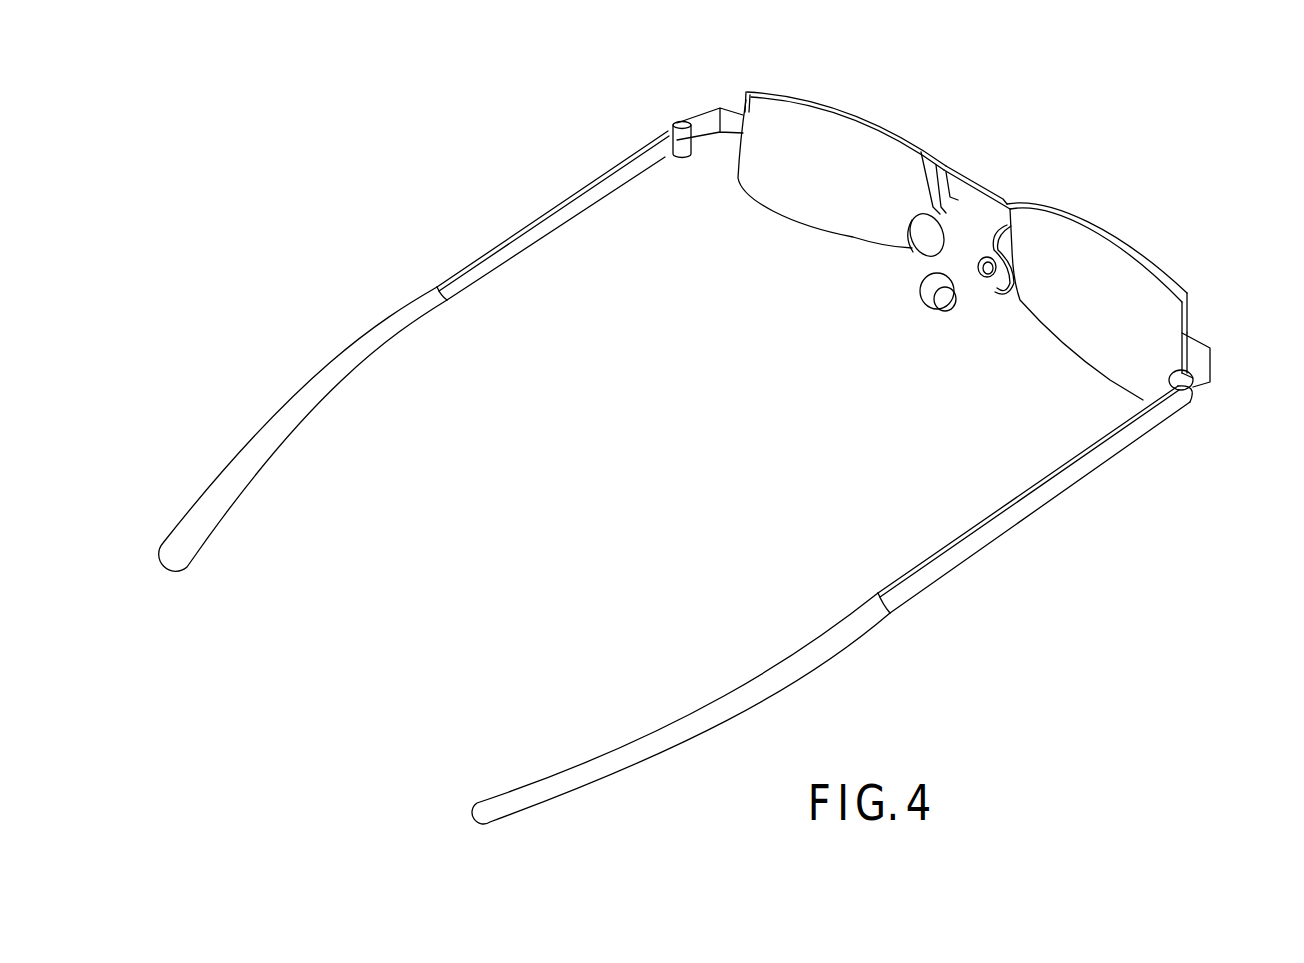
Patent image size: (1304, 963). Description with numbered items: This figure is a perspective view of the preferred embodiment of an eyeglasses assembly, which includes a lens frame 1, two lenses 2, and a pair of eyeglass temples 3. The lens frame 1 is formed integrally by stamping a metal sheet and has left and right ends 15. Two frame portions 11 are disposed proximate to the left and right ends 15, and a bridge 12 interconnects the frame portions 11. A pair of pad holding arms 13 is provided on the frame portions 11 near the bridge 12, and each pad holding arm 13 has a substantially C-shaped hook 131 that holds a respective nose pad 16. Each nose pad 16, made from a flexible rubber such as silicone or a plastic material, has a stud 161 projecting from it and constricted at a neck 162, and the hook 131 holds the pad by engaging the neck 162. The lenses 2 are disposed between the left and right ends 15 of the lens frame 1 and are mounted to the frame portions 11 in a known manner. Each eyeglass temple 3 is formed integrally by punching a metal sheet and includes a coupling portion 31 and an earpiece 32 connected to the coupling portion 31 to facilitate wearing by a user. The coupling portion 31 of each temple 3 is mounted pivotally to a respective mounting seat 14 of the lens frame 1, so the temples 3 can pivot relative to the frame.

The lens frame 1 is at (985, 172).
The frame portions 11 is at (843, 112).
The bridge 12 is at (1005, 196).
The pad holding arms 13 is at (931, 197).
The C-shaped hook 131 is at (984, 277).
The mounting seats 14 is at (690, 110).
The left and right ends 15 is at (752, 90).
The nose pads 16 is at (910, 245).
The stud 161 is at (946, 308).
The neck 162 is at (928, 305).
The lenses 2 is at (781, 190).
The eyeglass temples 3 is at (441, 260).
The coupling portion 31 is at (655, 128).
The earpiece 32 is at (233, 470).